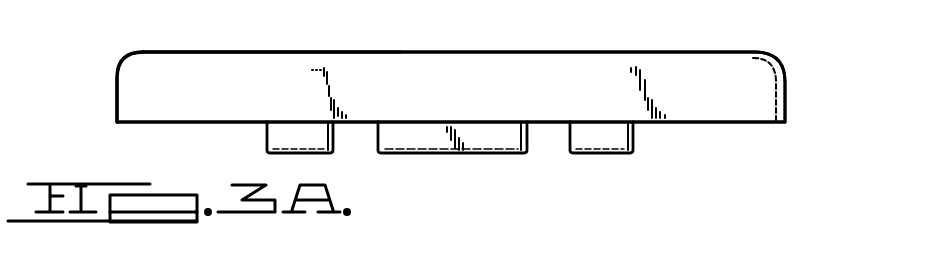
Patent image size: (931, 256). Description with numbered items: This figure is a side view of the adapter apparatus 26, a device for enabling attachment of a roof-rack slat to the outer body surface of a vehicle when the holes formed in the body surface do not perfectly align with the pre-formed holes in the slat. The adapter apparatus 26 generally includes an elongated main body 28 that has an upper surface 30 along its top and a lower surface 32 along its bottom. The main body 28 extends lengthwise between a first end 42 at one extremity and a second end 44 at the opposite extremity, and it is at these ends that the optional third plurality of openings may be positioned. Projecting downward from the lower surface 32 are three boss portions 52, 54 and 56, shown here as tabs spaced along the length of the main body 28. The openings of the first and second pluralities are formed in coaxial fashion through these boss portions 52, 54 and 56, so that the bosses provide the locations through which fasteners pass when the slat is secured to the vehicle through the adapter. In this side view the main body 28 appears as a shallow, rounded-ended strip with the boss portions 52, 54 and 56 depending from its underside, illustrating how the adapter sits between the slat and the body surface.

The adapter apparatus 26 is at (798, 54).
The main body 28 is at (312, 53).
The upper surface 30 is at (205, 52).
The lower surface 32 is at (727, 122).
The first end 42 is at (117, 72).
The second end 44 is at (785, 110).
The boss portion 52 is at (333, 137).
The boss portion 54 is at (527, 137).
The boss portion 56 is at (633, 137).